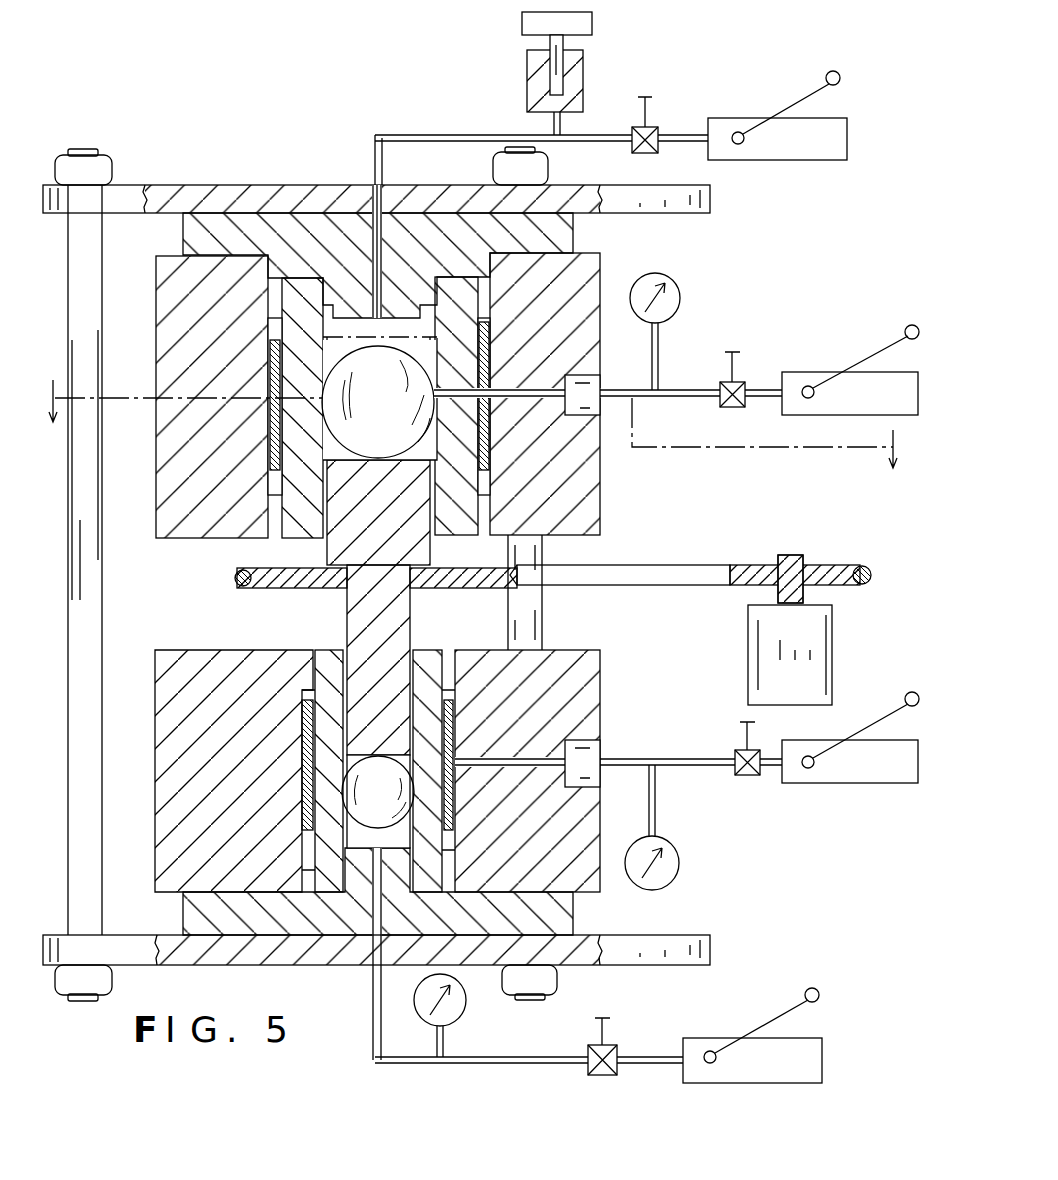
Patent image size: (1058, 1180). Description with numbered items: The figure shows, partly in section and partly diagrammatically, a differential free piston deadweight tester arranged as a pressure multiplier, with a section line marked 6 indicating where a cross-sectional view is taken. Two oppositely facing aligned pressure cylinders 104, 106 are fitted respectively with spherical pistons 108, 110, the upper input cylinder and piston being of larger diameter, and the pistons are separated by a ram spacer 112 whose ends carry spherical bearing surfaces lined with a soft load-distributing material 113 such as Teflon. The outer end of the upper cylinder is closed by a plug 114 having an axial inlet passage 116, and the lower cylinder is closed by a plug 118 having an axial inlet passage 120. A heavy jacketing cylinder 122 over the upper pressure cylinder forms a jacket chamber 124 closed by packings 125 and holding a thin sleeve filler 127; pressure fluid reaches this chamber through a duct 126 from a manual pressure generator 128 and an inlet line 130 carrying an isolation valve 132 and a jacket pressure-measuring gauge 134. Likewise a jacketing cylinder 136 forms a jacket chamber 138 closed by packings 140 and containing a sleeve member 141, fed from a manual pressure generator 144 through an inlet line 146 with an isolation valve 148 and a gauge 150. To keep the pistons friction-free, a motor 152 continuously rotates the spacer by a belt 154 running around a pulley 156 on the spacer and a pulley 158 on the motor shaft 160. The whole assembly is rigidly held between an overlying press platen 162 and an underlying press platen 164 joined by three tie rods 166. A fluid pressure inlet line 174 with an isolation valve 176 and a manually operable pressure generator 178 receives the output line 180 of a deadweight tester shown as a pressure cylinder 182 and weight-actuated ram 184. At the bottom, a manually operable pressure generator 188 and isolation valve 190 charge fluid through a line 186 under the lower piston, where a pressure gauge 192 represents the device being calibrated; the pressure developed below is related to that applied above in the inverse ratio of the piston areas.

The pressure cylinder 104 is at (300, 525).
The pressure cylinder 106 is at (320, 870).
The spherical piston 108 is at (397, 416).
The spherical piston 110 is at (396, 804).
The ram spacer 112 is at (352, 630).
The load-distributing material 113 is at (370, 755).
The plug 114 is at (358, 235).
The axial inlet passage 116 is at (393, 267).
The plug 118 is at (585, 918).
The axial inlet passage 120 is at (372, 915).
The jacketing cylinder 122 is at (190, 300).
The jacket chamber 124 is at (550, 470).
The packings 125 is at (490, 322).
The duct 126 is at (490, 405).
The sleeve filler 127 is at (272, 422).
The manual pressure generator 128 is at (792, 378).
The inlet line 130 is at (640, 397).
The isolation valve 132 is at (722, 384).
The jacket pressure-measuring gauge 134 is at (679, 303).
The jacketing cylinder 136 is at (168, 840).
The jacket chamber 138 is at (305, 760).
The packings 140 is at (455, 693).
The sleeve member 141 is at (452, 735).
The manual pressure generator 144 is at (880, 768).
The inlet line 146 is at (655, 746).
The isolation valve 148 is at (738, 752).
The jacket pressure-measuring gauge 150 is at (679, 860).
The motor 152 is at (805, 640).
The belt 154 is at (630, 578).
The pulley 156 is at (288, 590).
The pulley 158 is at (755, 568).
The motor shaft 160 is at (790, 565).
The press platen 162 is at (115, 190).
The press platen 164 is at (125, 958).
The tie rods 166 is at (95, 380).
The fluid pressure inlet line 174 is at (440, 135).
The isolation valve 176 is at (650, 128).
The manually operable pressure generator 178 is at (718, 125).
The output line 180 is at (553, 128).
The pressure cylinder 182 is at (580, 65).
The weight-actuated ram 184 is at (543, 45).
The line 186 is at (376, 1052).
The manually operable pressure generator 188 is at (780, 1075).
The isolation valve 190 is at (588, 1066).
The pressure gauge 192 is at (462, 1006).
The section line 6 is at (472, 424).